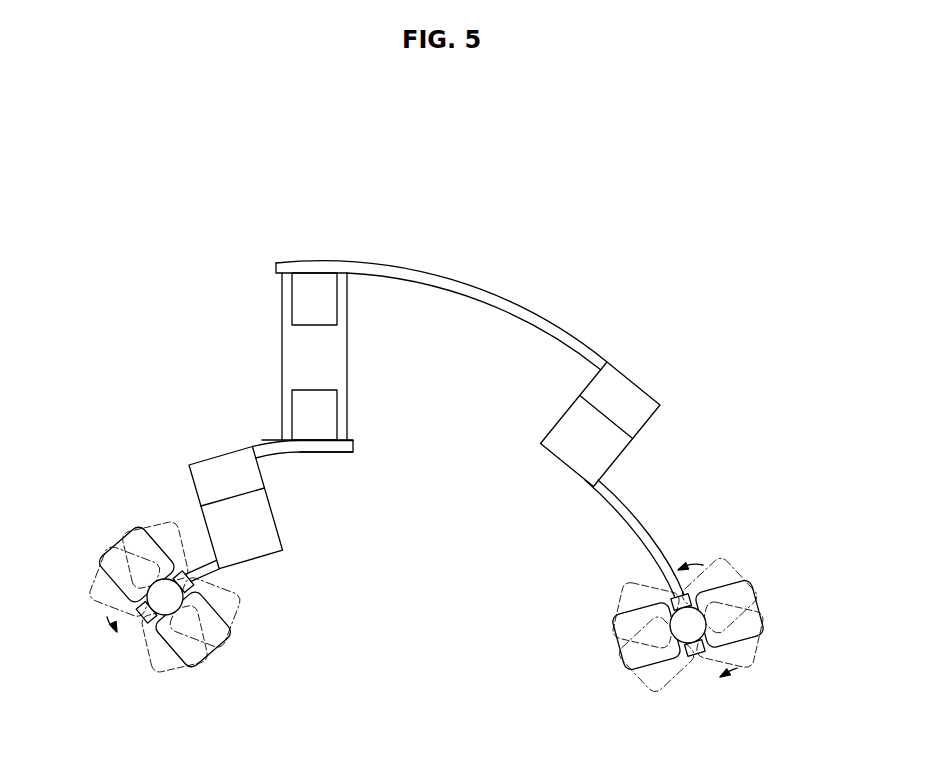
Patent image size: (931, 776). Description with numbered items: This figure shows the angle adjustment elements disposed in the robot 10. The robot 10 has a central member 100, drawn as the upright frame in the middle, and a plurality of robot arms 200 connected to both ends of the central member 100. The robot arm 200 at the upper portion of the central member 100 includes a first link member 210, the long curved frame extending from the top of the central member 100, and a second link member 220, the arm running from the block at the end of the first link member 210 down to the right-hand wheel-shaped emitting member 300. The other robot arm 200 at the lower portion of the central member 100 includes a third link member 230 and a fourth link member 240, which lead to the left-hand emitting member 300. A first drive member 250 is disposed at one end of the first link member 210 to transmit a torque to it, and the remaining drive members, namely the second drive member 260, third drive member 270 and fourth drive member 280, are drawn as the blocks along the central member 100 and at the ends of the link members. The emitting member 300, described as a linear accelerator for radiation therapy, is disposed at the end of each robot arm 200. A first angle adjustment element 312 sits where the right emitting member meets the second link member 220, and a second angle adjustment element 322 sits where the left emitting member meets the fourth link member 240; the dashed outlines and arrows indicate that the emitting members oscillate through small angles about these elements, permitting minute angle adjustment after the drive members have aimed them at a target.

The robot 10 is at (458, 128).
The central member 100 is at (283, 355).
The robot arm 200 is at (155, 437).
The first link member 210 is at (453, 280).
The second link member 220 is at (647, 530).
The third link member 230 is at (263, 440).
The fourth link member 240 is at (202, 552).
The first drive member 250 is at (337, 296).
The second drive member 260 is at (560, 418).
The third drive member 270 is at (337, 412).
The fourth drive member 280 is at (274, 520).
The emitting member 300 is at (112, 535).
The first angle adjustment element 312 is at (683, 632).
The second angle adjustment element 322 is at (167, 603).